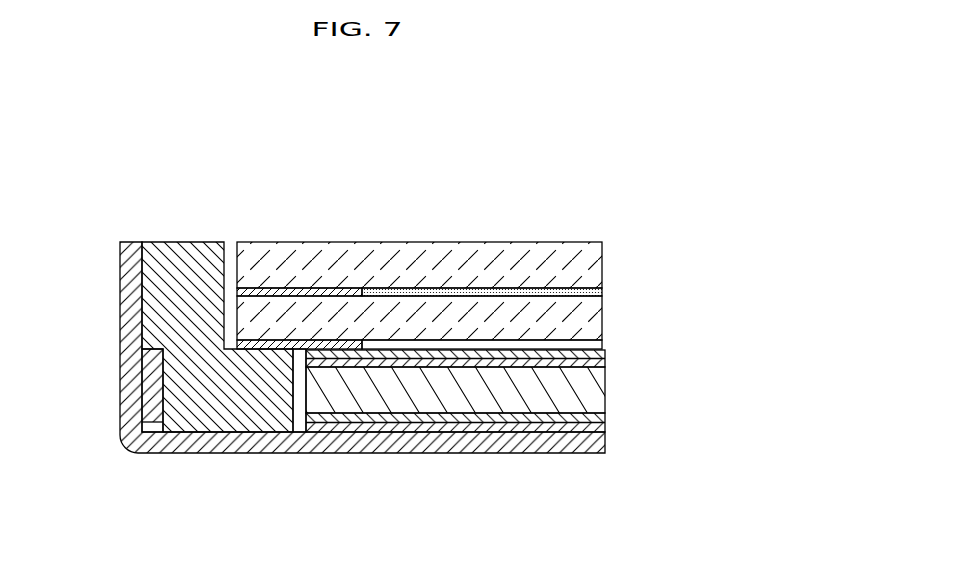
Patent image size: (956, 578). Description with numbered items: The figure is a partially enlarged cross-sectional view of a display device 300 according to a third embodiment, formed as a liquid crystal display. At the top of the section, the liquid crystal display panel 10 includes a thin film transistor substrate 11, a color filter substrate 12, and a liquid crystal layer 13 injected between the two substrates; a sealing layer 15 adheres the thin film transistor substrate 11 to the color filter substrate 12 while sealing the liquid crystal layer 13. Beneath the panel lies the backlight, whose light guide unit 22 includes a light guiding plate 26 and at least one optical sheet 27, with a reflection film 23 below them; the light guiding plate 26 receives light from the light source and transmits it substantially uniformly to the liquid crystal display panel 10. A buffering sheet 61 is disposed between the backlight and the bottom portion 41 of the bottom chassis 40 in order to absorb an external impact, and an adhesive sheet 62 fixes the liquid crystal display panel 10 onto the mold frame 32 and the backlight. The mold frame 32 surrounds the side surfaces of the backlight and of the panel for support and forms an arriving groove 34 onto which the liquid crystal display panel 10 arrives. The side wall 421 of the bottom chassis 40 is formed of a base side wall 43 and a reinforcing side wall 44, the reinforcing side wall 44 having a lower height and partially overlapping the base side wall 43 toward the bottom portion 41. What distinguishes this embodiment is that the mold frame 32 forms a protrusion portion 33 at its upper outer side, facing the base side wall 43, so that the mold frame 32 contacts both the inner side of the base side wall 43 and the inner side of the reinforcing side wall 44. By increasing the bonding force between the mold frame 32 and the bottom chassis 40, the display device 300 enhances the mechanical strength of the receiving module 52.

The display device 300 is at (350, 169).
The liquid crystal display panel 10 is at (533, 236).
The thin film transistor substrate 11 is at (597, 310).
The color filter substrate 12 is at (597, 262).
The liquid crystal layer 13 is at (447, 290).
The sealing layer 15 is at (290, 292).
The arriving groove 34 is at (267, 348).
The light guide unit 22 is at (651, 347).
The reflection film 23 is at (605, 416).
The light guiding plate 26 is at (600, 390).
The optical sheet 27 is at (600, 356).
The mold frame 32 is at (198, 428).
The protrusion portion 33 is at (150, 285).
The bottom chassis 40 is at (130, 462).
The bottom portion 41 is at (376, 447).
The base side wall 43 is at (127, 338).
The reinforcing side wall 44 is at (150, 385).
The side wall 421 is at (82, 328).
The receiving module 52 is at (72, 504).
The buffering sheet 61 is at (442, 425).
The adhesive sheet 62 is at (325, 345).